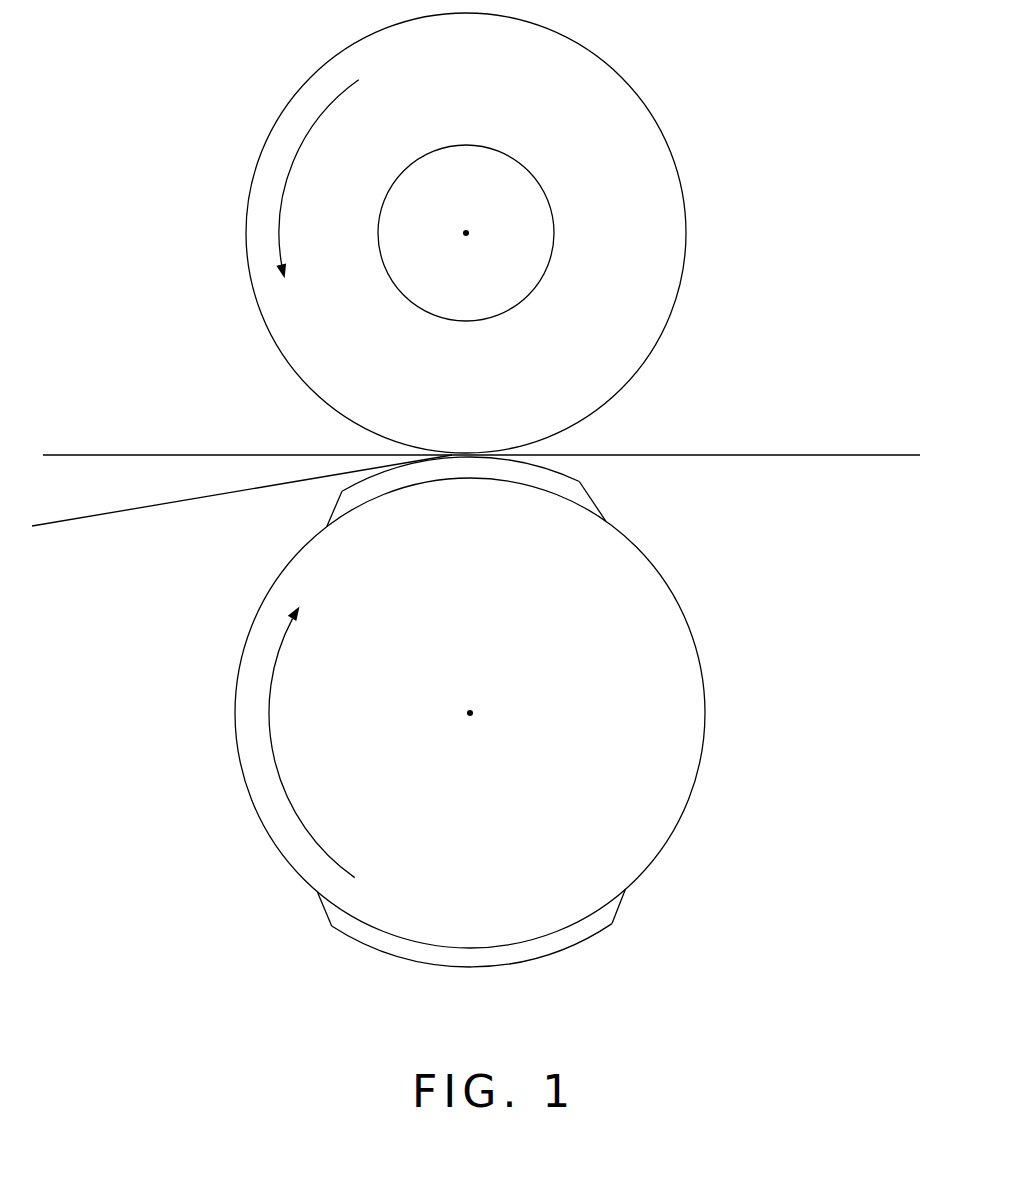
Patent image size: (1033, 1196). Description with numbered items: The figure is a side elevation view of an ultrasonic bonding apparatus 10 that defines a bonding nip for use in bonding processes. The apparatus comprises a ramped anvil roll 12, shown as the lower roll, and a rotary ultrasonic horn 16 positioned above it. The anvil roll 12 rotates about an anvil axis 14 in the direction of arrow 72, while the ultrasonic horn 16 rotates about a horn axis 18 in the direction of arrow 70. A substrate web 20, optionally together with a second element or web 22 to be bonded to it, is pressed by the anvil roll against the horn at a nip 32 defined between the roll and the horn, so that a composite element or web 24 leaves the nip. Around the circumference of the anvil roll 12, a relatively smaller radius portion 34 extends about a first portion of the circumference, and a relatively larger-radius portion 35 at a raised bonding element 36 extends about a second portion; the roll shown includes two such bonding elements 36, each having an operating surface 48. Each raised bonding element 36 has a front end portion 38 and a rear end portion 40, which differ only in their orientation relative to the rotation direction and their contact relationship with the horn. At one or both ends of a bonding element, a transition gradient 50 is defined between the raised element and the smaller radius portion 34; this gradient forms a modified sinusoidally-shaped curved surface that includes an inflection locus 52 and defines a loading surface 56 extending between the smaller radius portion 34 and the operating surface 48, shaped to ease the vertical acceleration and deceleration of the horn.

The ultrasonic bonding apparatus 10 is at (714, 48).
The ramped anvil roll 12 is at (478, 713).
The anvil axis 14 is at (470, 713).
The rotary ultrasonic horn 16 is at (634, 156).
The horn axis 18 is at (466, 233).
The substrate web 20 is at (153, 453).
The second element or web 22 is at (128, 510).
The composite element or web 24 is at (784, 453).
The nip 32 is at (522, 458).
The relatively smaller radius portion 34 is at (690, 627).
The relatively larger-radius portion 35 is at (432, 967).
The raised bonding element 36 is at (577, 968).
The front end portion 38 is at (600, 510).
The rear end portion 40 is at (613, 915).
The operating surface 48 is at (515, 967).
The transition gradient 50 is at (325, 931).
The inflection locus 52 is at (320, 518).
The loading surface 56 is at (340, 497).
The arrow 70 is at (290, 162).
The arrow 72 is at (268, 713).